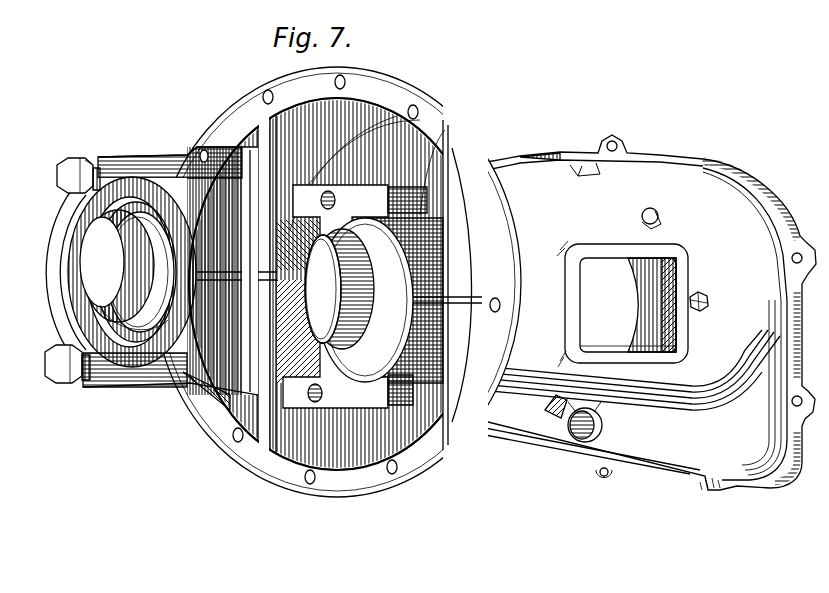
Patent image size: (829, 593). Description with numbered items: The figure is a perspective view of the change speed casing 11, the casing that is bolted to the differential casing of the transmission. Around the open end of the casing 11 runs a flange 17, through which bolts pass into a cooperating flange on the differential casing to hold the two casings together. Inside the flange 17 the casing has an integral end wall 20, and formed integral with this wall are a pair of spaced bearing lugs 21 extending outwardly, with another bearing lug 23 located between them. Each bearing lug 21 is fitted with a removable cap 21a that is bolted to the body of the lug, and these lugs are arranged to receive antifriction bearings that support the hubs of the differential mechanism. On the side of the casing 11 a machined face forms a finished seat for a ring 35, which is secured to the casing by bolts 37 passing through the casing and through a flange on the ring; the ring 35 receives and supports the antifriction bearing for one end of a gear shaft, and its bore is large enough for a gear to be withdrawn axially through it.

The change speed casing 11 is at (648, 312).
The flange 17 is at (372, 480).
The end wall 20 is at (367, 137).
The bearing lug 21 is at (156, 137).
The removable cap 21a is at (102, 190).
The bearing lug 23 is at (323, 289).
The ring 35 is at (647, 303).
The bolt 37 is at (709, 299).